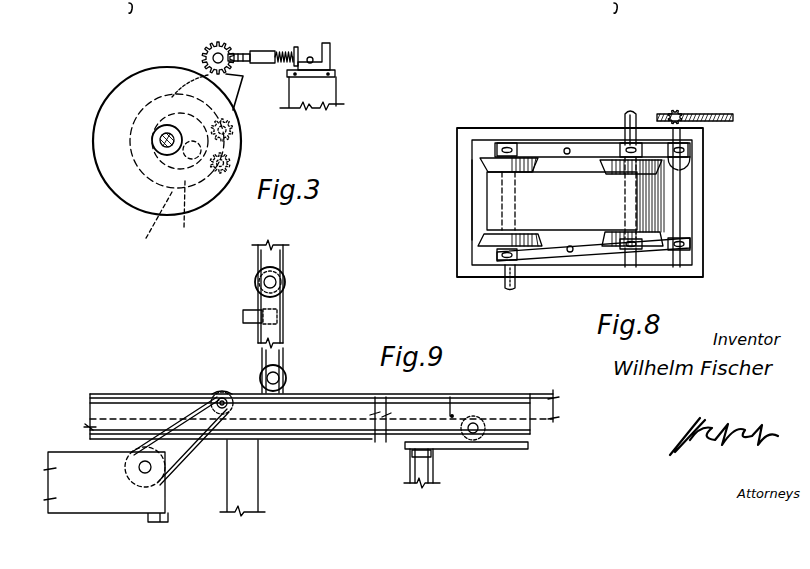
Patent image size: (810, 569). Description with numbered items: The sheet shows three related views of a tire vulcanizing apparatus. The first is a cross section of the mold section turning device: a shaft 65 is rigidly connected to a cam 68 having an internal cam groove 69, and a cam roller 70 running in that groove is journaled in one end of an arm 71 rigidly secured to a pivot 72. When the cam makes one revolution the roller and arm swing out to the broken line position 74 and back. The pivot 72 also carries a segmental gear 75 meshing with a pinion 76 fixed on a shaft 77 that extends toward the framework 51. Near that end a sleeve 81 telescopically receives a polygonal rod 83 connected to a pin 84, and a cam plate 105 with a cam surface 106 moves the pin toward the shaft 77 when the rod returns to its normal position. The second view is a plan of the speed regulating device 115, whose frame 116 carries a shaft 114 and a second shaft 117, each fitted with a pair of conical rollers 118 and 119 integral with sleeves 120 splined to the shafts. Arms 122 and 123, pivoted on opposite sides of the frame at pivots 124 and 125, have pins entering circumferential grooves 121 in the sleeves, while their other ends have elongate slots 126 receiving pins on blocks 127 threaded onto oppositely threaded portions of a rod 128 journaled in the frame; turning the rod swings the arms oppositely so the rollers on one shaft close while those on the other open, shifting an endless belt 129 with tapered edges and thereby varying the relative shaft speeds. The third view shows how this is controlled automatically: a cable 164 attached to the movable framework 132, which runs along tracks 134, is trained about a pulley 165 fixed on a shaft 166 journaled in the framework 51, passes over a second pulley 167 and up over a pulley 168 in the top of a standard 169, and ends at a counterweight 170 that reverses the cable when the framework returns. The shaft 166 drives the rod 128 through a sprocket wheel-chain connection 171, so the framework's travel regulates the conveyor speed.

In FIG. 3, the second shaft 65 is at (160, 146).
In FIG. 3, the cam 68 is at (134, 198).
In FIG. 3, the internal cam groove 69 is at (176, 163).
In FIG. 3, the cam roller 70 is at (201, 196).
In FIG. 3, the arm 71 is at (238, 146).
In FIG. 3, the pivot 72 is at (236, 128).
In FIG. 3, the broken line position 74 is at (190, 191).
In FIG. 3, the segmental gear 75 is at (240, 100).
In FIG. 3, the pinion 76 is at (222, 44).
In FIG. 3, the shaft 77 is at (206, 51).
In FIG. 3, the sleeve 81 is at (268, 51).
In FIG. 3, the rod 83 is at (289, 50).
In FIG. 3, the pin 84 is at (305, 55).
In FIG. 3, the cam plate 105 is at (331, 60).
In FIG. 3, the cam surface 106 is at (323, 48).
In FIG. 8, the shaft 114 is at (633, 112).
In FIG. 8, the speed regulating device 115 is at (693, 213).
In FIG. 8, the frame 116 is at (704, 192).
In FIG. 8, the second shaft 117 is at (517, 283).
In FIG. 8, the roller 118 is at (525, 230).
In FIG. 8, the roller 119 is at (523, 173).
In FIG. 8, the sleeve 120 is at (500, 260).
In FIG. 8, the circumferentially extending groove 121 is at (500, 150).
In FIG. 8, the arm 122 is at (587, 258).
In FIG. 8, the arm 123 is at (542, 147).
In FIG. 8, the pivot 124 is at (573, 234).
In FIG. 8, the pivot 125 is at (568, 157).
In FIG. 8, the elongate slot 126 is at (690, 147).
In FIG. 8, the blocks 127 is at (683, 166).
In FIG. 8, the rod 128 is at (681, 222).
In FIG. 9, the rod 128 is at (152, 476).
In FIG. 8, the endless belt 129 is at (471, 207).
In FIG. 8, the second pulley 167 is at (717, 113).
In FIG. 9, the second pulley 167 is at (287, 375).
In FIG. 9, the framework 51 is at (279, 443).
In FIG. 9, the framework 132 is at (523, 392).
In FIG. 9, the tracks 134 is at (508, 449).
In FIG. 9, the cable 164 is at (333, 417).
In FIG. 9, the pulley 165 is at (224, 396).
In FIG. 9, the shaft 166 is at (217, 397).
In FIG. 9, the pulley 168 is at (285, 279).
In FIG. 9, the standard 169 is at (285, 340).
In FIG. 9, the counterweight 170 is at (243, 315).
In FIG. 9, the sprocket wheel-chain connection 171 is at (190, 457).